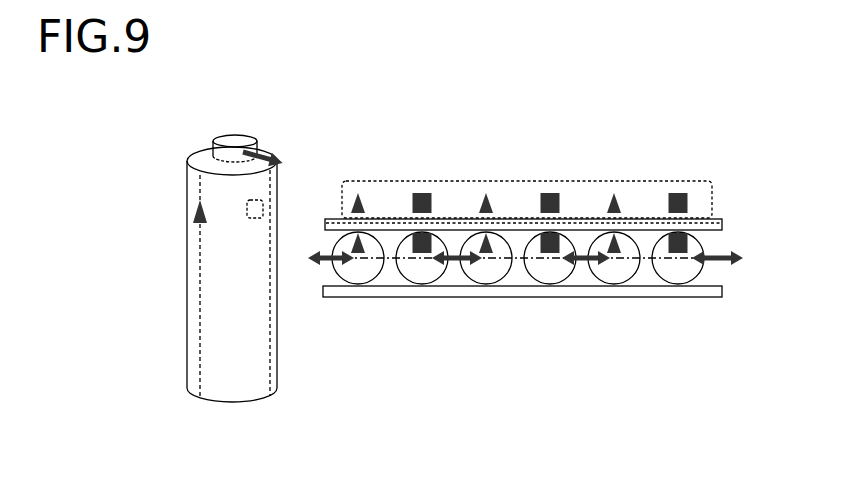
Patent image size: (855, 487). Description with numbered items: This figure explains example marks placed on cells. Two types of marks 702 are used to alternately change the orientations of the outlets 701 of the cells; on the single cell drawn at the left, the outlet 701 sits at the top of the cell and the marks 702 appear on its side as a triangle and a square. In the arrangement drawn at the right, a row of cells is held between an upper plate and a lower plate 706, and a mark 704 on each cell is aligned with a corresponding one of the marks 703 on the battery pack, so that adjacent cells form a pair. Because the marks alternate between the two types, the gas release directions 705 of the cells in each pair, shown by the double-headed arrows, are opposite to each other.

The outlet 701 is at (236, 139).
The marks 702 is at (244, 210).
The marks on battery pack 703 is at (480, 180).
The mark on cell 704 is at (408, 258).
The gas release directions 705 is at (587, 259).
The base plate 706 is at (652, 292).